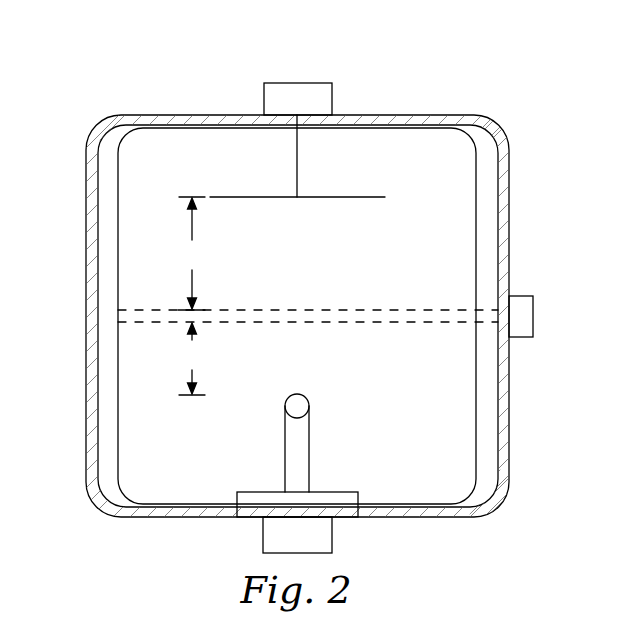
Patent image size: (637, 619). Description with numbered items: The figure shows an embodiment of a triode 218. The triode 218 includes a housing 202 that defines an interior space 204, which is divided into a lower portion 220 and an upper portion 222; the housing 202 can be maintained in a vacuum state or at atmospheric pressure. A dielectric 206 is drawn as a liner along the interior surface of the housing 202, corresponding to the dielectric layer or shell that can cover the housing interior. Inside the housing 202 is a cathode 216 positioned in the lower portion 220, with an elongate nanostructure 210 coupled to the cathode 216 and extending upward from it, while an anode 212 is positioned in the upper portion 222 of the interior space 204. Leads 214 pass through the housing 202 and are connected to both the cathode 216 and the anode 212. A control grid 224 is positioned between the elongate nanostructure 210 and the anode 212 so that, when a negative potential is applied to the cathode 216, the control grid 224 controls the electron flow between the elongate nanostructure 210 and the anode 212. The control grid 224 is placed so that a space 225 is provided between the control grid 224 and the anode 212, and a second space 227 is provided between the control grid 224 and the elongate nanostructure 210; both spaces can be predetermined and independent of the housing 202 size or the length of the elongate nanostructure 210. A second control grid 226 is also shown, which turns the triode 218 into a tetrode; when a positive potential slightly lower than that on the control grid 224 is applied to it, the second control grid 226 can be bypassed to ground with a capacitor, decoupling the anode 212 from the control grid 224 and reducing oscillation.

The triode 218 is at (75, 64).
The housing 202 is at (418, 115).
The interior space 204 is at (457, 258).
The inner liner 206 is at (118, 424).
The elongate nanostructure 210 is at (284, 450).
The anode 212 is at (345, 197).
The leads 214 is at (264, 98).
The cathode 216 is at (345, 492).
The lower portion 220 is at (454, 479).
The upper portion 222 is at (454, 161).
The control grid 224 is at (314, 310).
The space 225 is at (192, 253).
The second control grid 226 is at (314, 323).
The second space 227 is at (192, 359).